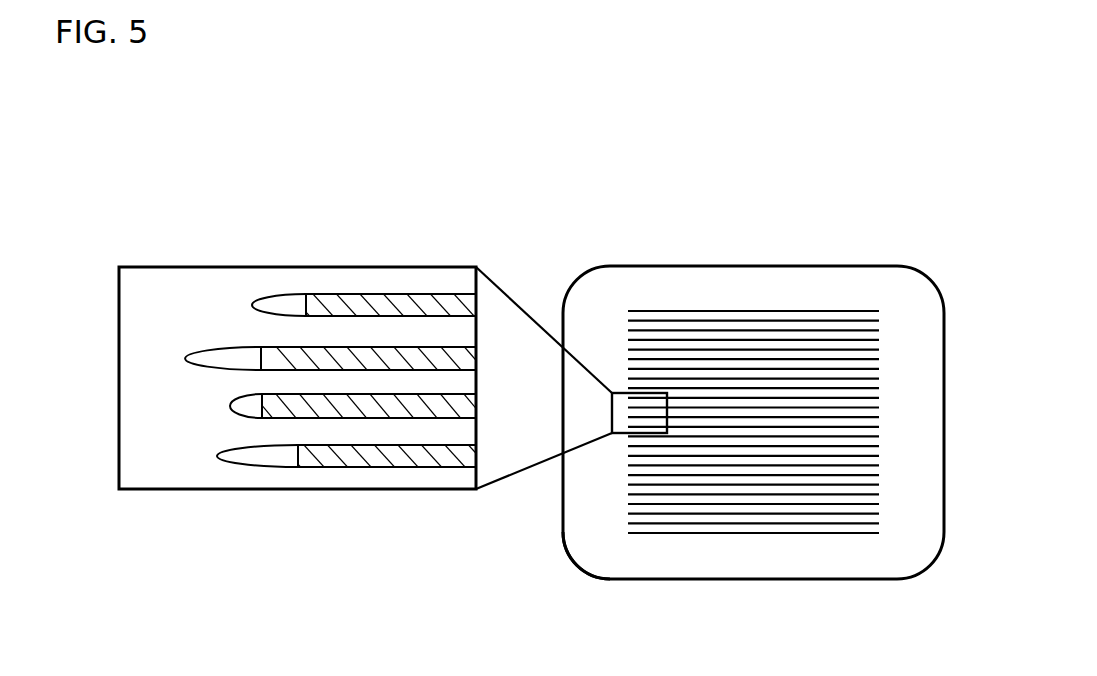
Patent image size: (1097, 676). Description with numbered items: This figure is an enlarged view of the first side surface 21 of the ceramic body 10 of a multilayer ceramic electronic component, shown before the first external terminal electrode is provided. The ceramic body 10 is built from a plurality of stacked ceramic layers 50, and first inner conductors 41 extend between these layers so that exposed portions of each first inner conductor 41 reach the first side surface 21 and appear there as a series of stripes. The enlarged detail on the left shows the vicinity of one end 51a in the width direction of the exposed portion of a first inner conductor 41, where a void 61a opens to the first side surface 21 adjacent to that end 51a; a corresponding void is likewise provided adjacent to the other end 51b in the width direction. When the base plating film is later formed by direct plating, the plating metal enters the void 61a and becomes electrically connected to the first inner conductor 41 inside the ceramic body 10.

The ceramic body 10 is at (888, 264).
The first side surface 21 is at (603, 530).
The first inner conductor 41 is at (407, 294).
The ceramic layers 50 is at (767, 505).
The one end in the width direction 51a is at (287, 347).
The another end in the width direction 51b is at (878, 533).
The void 61a is at (215, 347).